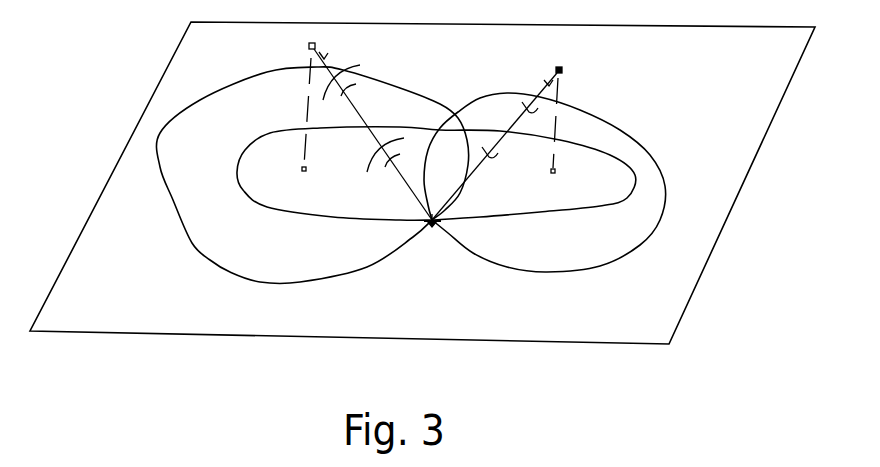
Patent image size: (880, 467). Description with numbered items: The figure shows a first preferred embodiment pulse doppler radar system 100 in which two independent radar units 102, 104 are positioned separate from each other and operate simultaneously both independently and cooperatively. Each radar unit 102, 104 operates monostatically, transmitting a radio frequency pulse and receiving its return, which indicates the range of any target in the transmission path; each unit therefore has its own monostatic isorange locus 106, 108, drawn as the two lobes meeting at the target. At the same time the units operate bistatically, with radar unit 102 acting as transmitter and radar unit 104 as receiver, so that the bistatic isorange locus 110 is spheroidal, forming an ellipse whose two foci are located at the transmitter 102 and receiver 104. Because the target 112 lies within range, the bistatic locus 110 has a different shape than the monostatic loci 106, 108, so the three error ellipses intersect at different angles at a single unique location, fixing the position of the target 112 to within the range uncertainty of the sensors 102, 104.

The pulse doppler radar system 100 is at (504, 319).
The radar unit 102 is at (308, 46).
The radar unit 104 is at (561, 70).
The monostatic isorange locus 106 is at (210, 258).
The monostatic isorange locus 108 is at (622, 129).
The bistatic isorange locus 110 is at (640, 162).
The target 112 is at (428, 224).